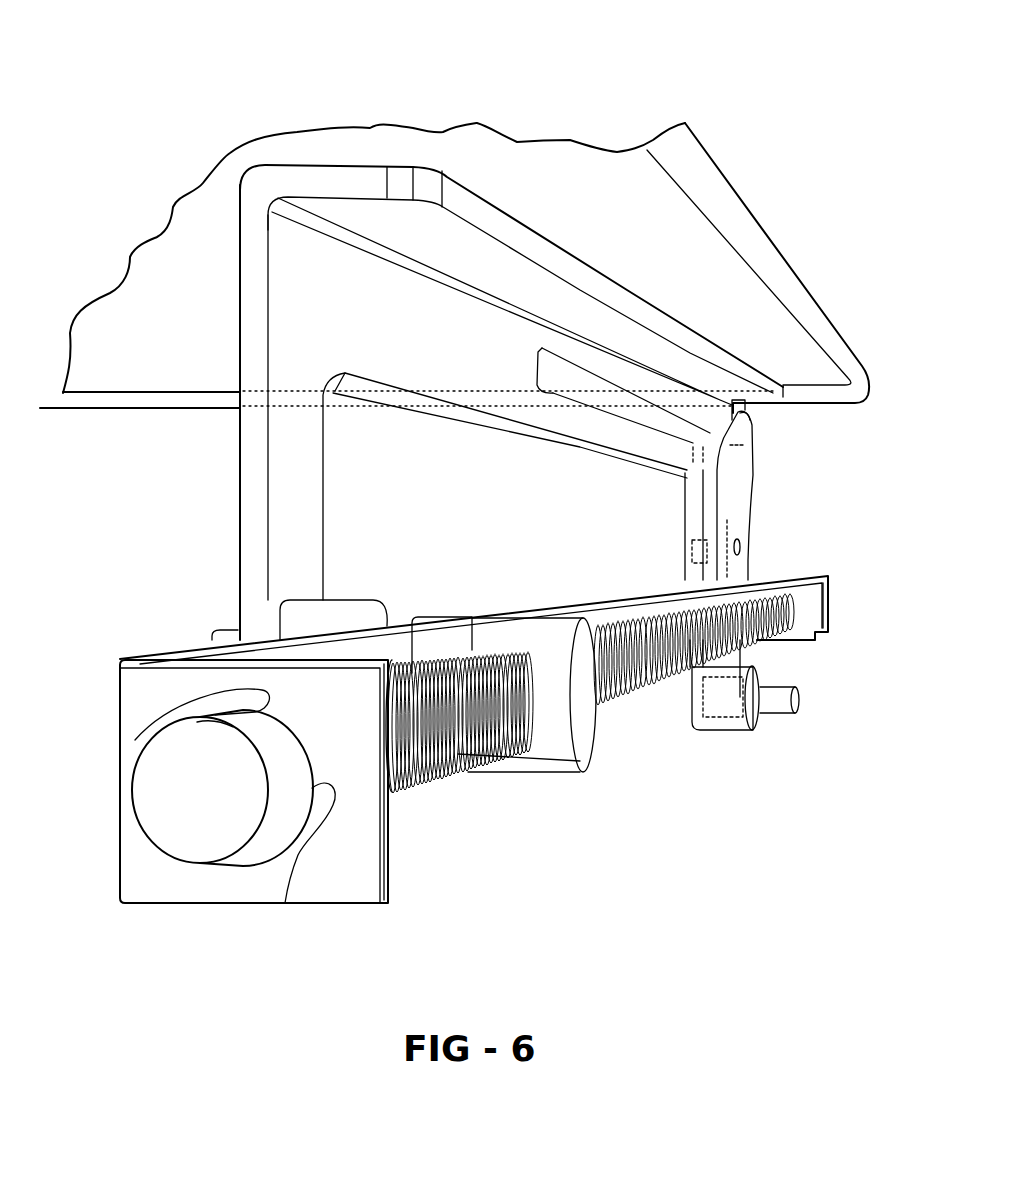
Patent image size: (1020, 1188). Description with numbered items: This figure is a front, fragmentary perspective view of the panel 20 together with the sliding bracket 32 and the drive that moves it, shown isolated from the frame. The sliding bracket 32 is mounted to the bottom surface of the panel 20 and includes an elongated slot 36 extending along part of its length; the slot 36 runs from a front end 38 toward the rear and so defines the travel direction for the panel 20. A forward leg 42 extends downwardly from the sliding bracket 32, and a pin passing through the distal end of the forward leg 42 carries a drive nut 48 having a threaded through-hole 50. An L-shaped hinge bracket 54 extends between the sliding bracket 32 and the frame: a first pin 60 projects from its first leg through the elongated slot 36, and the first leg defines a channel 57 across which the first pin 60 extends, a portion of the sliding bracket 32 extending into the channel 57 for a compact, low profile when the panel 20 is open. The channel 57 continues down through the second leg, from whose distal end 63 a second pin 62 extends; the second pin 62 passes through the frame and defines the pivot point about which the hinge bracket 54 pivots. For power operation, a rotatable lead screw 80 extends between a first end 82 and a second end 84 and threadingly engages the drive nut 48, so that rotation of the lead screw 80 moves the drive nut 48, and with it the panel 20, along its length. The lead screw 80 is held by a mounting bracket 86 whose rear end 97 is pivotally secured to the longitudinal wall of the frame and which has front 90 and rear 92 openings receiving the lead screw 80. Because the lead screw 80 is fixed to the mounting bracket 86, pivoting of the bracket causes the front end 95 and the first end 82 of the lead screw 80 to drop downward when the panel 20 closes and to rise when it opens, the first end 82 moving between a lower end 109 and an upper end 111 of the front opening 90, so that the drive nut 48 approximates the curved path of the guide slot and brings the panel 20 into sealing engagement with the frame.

The panel 20 is at (750, 207).
The sliding bracket 32 is at (323, 163).
The elongated slot 36 is at (640, 418).
The front end 38 is at (543, 367).
The forward leg 42 is at (237, 475).
The drive nut 48 is at (597, 762).
The threaded through-hole 50 is at (472, 617).
The L-shaped hinge bracket 54 is at (753, 477).
The channel 57 is at (712, 498).
The first pin 60 is at (747, 440).
The second pin 62 is at (797, 693).
The distal end 63 is at (760, 727).
The lead screw 80 is at (430, 780).
The first end 82 is at (398, 793).
The second end 84 is at (787, 628).
The mounting bracket 86 is at (153, 653).
The front opening 90 is at (297, 850).
The rear opening 92 is at (828, 605).
The front end 95 is at (387, 878).
The rear end 97 is at (830, 620).
The lower end 109 is at (300, 835).
The upper end 111 is at (140, 738).